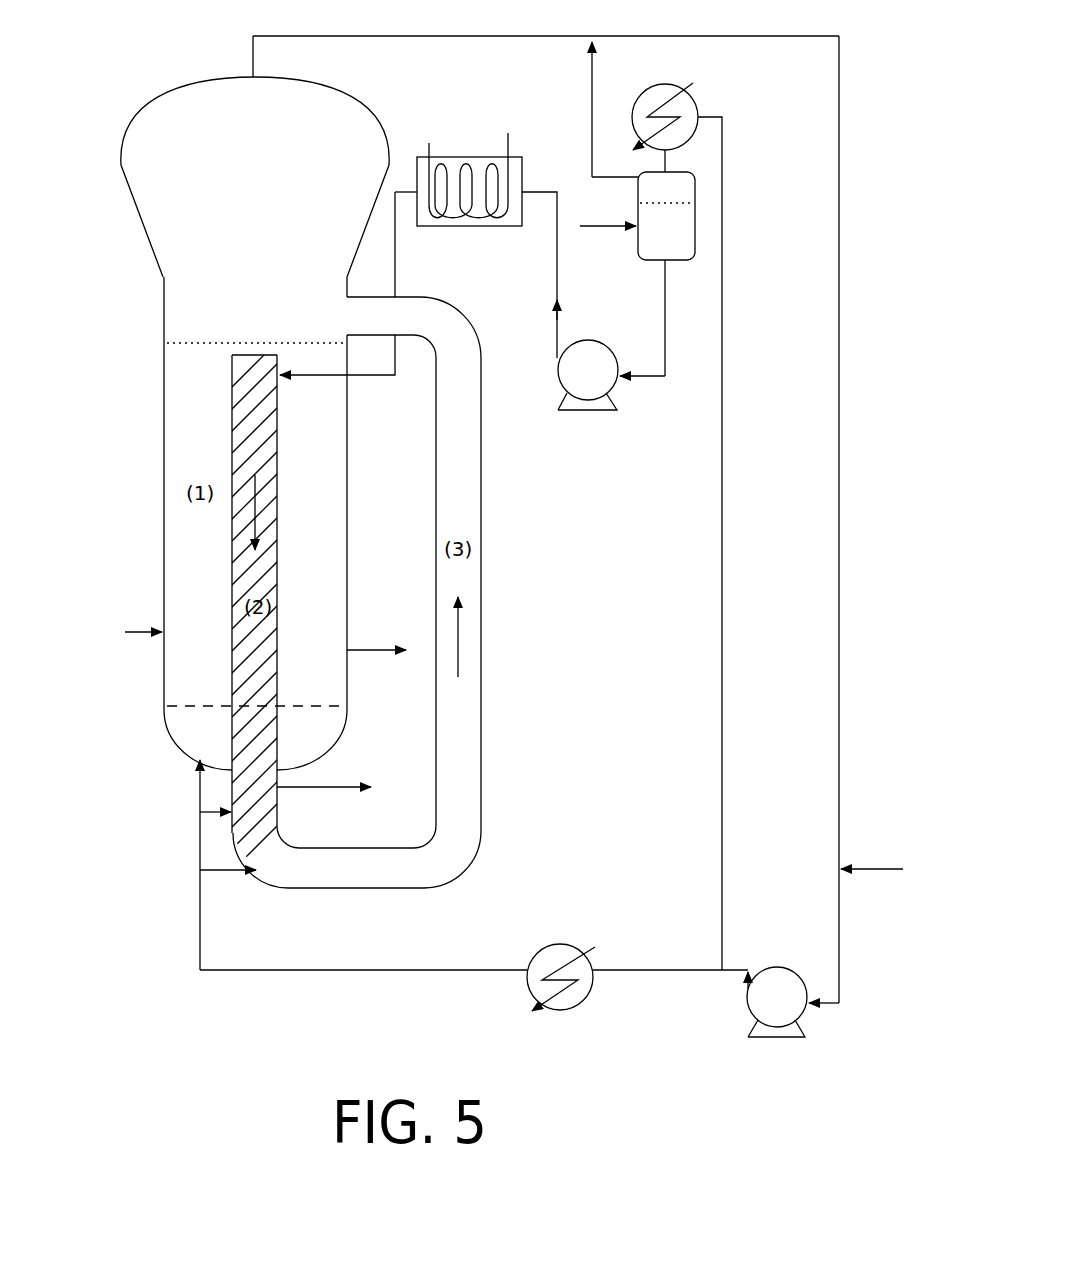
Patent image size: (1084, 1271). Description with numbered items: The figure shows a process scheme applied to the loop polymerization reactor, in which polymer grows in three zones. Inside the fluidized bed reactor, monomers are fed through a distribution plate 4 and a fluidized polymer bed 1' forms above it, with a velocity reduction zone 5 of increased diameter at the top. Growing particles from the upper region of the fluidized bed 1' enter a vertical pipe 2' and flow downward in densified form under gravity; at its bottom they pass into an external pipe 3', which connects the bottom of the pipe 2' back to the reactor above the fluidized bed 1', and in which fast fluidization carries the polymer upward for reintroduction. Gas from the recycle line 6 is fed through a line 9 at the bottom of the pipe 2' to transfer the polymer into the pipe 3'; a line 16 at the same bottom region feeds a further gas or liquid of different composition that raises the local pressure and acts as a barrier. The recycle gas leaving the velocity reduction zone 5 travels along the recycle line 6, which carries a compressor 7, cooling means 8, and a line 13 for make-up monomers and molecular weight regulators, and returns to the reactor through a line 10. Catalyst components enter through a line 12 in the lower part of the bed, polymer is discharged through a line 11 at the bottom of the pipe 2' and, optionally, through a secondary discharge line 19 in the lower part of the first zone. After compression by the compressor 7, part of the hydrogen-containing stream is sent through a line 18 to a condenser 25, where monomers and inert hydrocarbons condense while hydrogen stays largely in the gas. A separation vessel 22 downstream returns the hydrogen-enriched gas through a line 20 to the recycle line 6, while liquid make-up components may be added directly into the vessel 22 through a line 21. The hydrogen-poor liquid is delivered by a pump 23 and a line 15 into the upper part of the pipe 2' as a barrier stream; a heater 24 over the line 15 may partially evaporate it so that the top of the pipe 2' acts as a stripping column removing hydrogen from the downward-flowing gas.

The fluidized polymer bed 1' is at (195, 493).
The pipe 2' is at (167, 606).
The pipe 3' is at (457, 592).
The distribution plate 4 is at (190, 702).
The velocity reduction zone 5 is at (250, 175).
The recycle line 6 is at (839, 492).
The compressor 7 is at (757, 966).
The cooling means 8 is at (560, 944).
The line 9 is at (230, 871).
The line 10 is at (198, 905).
The discharge line 11 is at (345, 786).
The line 12 is at (125, 632).
The line 13 is at (862, 868).
The line 15 is at (395, 380).
The line 16 is at (230, 813).
The line 18 is at (722, 700).
The discharge line 19 is at (360, 649).
The line 20 is at (592, 98).
The line 21 is at (580, 226).
The separation vessel 22 is at (680, 224).
The pump 23 is at (588, 410).
The heater 24 is at (462, 166).
The condenser 25 is at (633, 95).